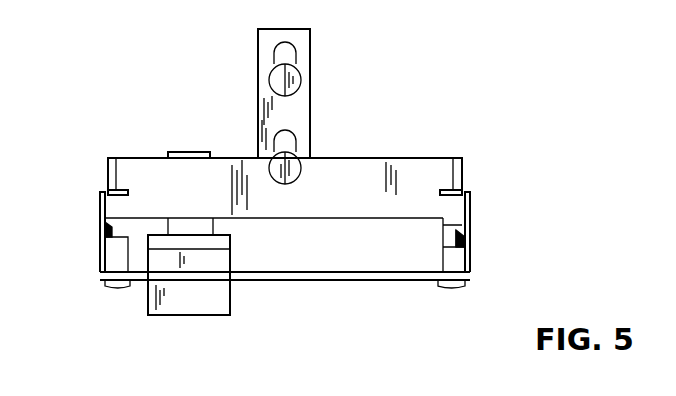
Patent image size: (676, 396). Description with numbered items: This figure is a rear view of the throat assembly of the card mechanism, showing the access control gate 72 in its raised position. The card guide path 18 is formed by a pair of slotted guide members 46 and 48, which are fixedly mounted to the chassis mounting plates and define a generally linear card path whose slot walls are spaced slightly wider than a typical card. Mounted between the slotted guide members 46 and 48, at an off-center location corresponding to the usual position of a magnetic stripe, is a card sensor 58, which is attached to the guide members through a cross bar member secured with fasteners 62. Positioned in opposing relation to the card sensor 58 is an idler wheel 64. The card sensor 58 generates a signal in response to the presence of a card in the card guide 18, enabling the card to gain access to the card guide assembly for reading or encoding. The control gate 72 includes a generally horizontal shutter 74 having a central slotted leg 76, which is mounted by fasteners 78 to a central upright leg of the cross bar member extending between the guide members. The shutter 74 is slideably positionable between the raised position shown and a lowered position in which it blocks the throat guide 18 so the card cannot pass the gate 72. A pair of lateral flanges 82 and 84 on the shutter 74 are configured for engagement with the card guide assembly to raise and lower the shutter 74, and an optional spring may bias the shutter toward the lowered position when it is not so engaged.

The card guide path 18 is at (132, 232).
The slotted guide member 46 is at (465, 262).
The slotted guide member 48 is at (104, 262).
The card sensor 58 is at (207, 313).
The fasteners 62 is at (127, 288).
The idler wheel 64 is at (190, 152).
The access control gate 72 is at (362, 132).
The shutter 74 is at (410, 160).
The slotted leg 76 is at (302, 42).
The fasteners 78 is at (275, 81).
The lateral flange 82 is at (462, 171).
The lateral flange 84 is at (108, 165).